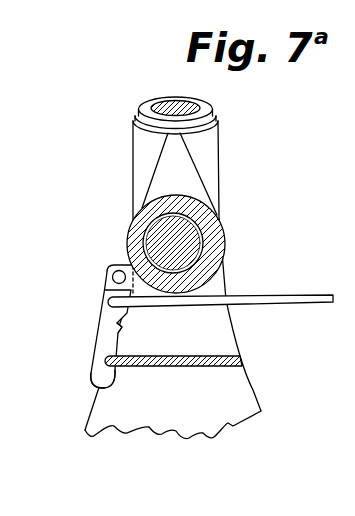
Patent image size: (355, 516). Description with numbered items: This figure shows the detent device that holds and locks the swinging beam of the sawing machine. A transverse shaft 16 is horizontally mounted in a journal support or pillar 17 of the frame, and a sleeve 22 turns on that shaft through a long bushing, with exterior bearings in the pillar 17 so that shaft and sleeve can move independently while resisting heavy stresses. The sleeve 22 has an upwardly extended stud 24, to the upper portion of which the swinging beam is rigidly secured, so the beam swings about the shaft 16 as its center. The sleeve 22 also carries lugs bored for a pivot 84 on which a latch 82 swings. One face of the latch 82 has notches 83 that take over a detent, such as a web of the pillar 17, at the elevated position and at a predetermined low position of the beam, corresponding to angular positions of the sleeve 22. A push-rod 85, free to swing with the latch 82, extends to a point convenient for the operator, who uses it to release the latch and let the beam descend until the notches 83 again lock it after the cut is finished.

The transverse shaft 16 is at (183, 242).
The journal support or pillar 17 is at (201, 343).
The sleeve 22 is at (217, 210).
The stud 24 is at (198, 107).
The latch 82 is at (105, 322).
The notch 83 is at (121, 327).
The pivot 84 is at (103, 268).
The push-rod 85 is at (220, 289).